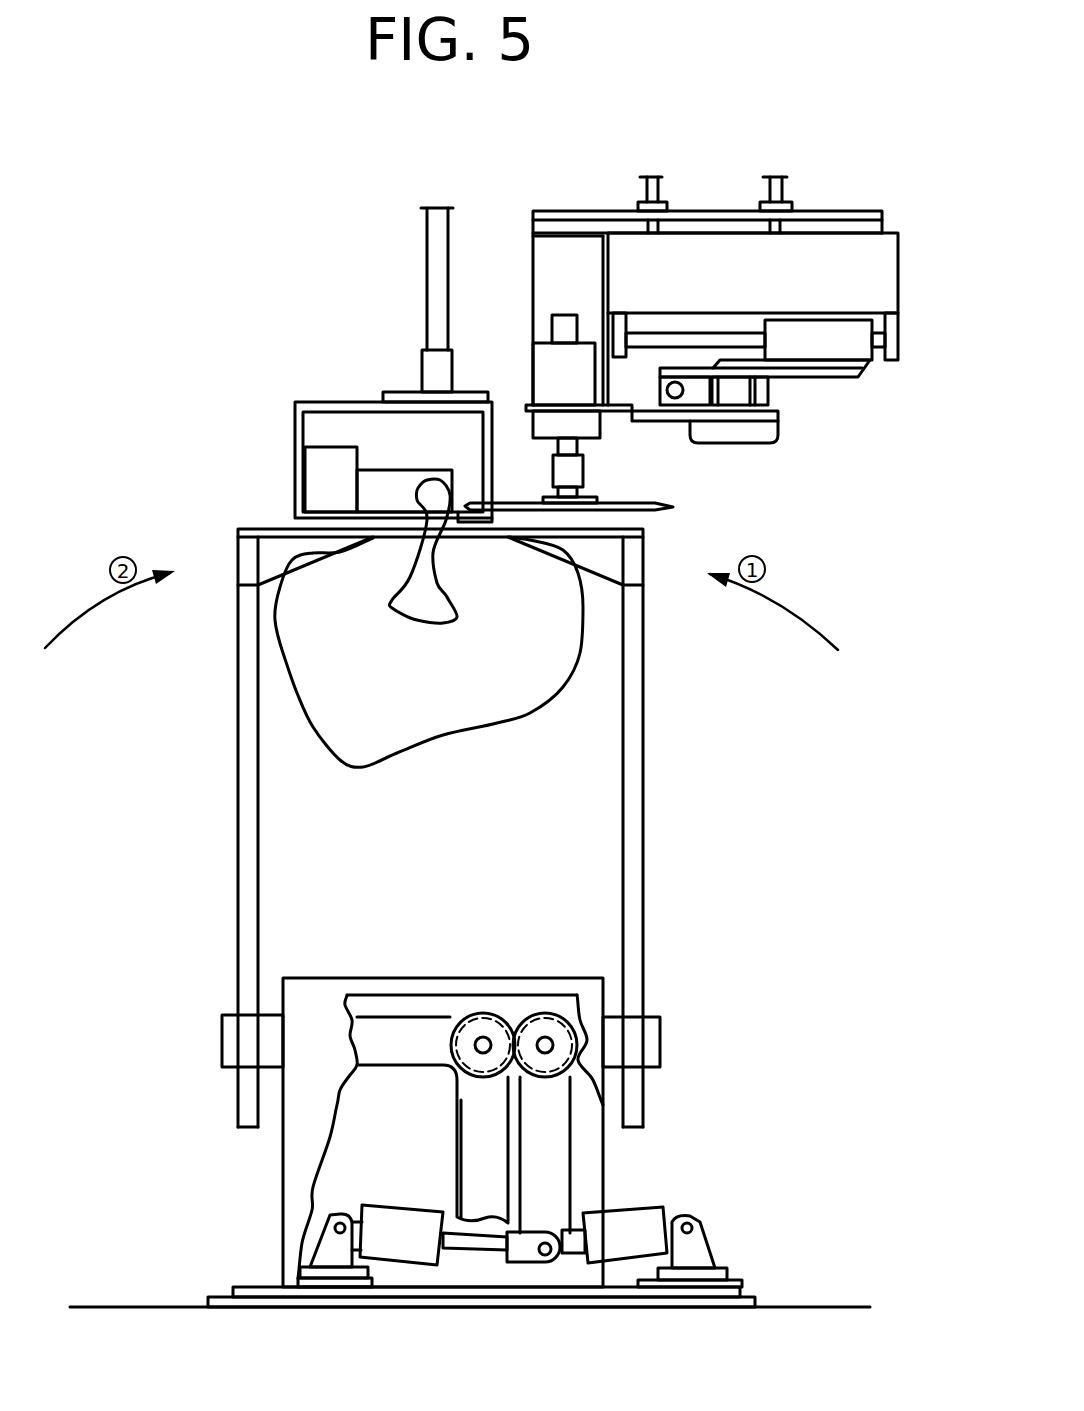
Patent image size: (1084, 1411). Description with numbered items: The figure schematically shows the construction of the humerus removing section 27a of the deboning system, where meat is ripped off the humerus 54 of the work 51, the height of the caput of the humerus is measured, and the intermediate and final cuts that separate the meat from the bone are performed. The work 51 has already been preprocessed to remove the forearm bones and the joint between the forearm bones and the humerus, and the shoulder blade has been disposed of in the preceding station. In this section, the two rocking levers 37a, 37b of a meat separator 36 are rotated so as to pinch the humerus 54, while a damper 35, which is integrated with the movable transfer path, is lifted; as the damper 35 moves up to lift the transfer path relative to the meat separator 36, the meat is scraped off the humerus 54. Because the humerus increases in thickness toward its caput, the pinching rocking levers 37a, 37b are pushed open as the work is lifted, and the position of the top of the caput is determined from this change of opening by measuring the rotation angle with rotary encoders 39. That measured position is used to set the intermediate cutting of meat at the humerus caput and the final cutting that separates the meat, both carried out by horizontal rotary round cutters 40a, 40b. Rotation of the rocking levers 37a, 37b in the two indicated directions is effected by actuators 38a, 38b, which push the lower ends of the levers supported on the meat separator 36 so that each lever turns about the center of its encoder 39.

The humerus removing section 27a is at (904, 200).
The damper 35 is at (297, 488).
The meat separator 36 is at (451, 937).
The rocking lever 37a is at (238, 665).
The rocking lever 37b is at (628, 550).
The actuator 38a is at (618, 1255).
The actuator 38b is at (407, 1252).
The rotary encoder 39 is at (482, 1013).
The horizontal rotary round cutter 40a is at (640, 470).
The horizontal rotary round cutter 40b is at (652, 437).
The work 51 is at (460, 710).
The humerus 54 is at (443, 605).